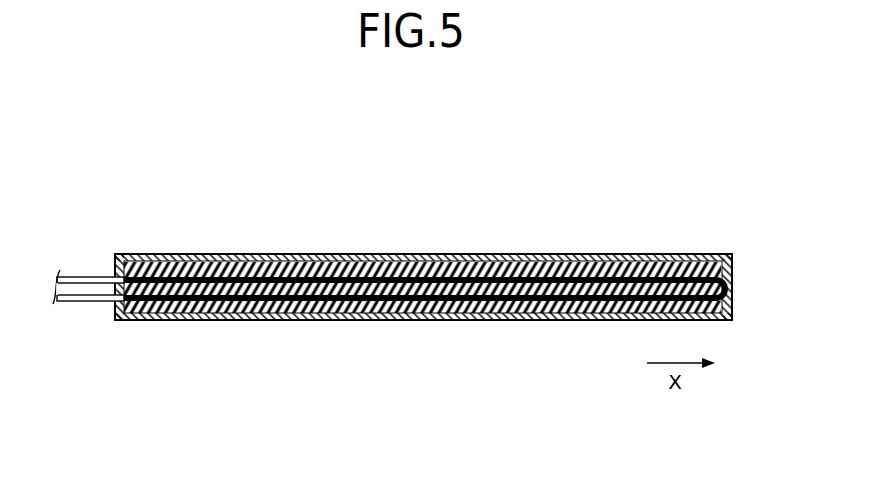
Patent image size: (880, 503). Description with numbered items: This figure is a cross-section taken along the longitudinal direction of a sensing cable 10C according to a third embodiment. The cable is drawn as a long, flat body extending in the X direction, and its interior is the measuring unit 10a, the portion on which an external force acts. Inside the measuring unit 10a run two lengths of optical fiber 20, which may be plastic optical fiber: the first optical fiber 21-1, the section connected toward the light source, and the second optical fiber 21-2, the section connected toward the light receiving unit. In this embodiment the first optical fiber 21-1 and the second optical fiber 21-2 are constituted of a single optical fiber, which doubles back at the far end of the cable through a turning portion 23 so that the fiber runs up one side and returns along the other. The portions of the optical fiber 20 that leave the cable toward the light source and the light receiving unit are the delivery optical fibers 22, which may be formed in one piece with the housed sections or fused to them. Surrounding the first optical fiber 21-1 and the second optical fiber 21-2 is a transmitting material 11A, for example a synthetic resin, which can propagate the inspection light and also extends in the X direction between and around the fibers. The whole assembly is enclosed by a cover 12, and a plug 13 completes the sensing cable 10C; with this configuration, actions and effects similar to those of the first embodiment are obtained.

The sensing cable 10C is at (413, 274).
The measuring unit 10a is at (648, 250).
The transmitting material 11A is at (412, 254).
The cover 12 is at (508, 254).
The plug 13 is at (108, 289).
The optical fiber 20 is at (389, 290).
The first optical fiber 21-1 is at (226, 268).
The second optical fiber 21-2 is at (224, 306).
The delivery optical fiber 22 is at (227, 181).
The turning portion 23 is at (733, 275).